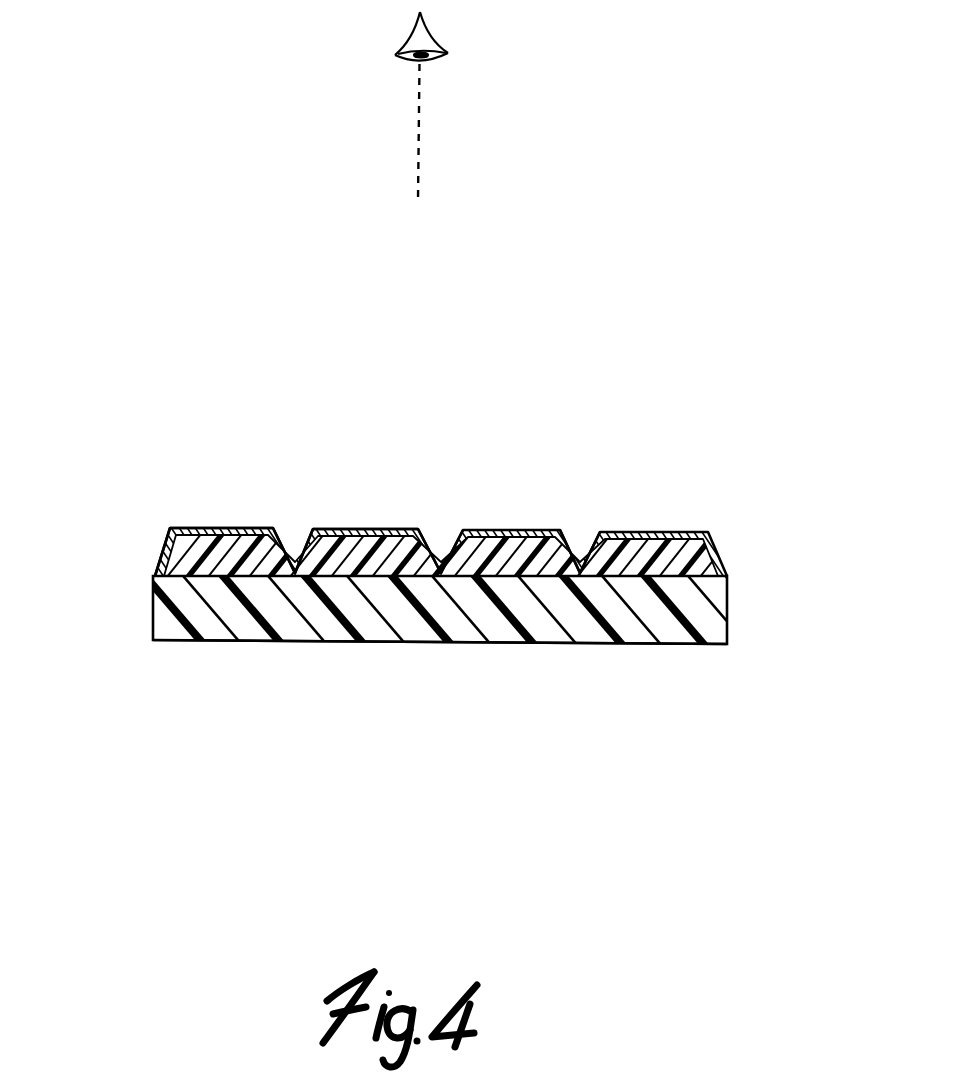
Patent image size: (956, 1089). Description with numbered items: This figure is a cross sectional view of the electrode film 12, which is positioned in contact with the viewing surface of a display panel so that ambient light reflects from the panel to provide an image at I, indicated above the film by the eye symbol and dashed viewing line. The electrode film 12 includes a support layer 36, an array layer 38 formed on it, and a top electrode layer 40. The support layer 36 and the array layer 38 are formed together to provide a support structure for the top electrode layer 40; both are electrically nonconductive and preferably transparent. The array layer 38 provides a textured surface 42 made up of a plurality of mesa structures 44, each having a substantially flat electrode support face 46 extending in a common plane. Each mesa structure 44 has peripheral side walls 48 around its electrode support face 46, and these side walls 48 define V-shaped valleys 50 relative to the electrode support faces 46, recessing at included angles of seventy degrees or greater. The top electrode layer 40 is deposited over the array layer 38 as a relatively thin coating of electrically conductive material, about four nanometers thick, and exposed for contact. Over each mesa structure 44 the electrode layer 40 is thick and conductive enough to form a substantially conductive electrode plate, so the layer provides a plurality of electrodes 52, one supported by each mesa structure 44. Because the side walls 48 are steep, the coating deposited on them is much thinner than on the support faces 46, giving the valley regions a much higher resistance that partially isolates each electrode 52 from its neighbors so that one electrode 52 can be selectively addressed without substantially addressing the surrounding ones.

The electrode film 12 is at (178, 341).
The support layer 36 is at (728, 609).
The array layer 38 is at (720, 556).
The top electrode layer 40 is at (668, 532).
The textured surface 42 is at (150, 550).
The mesa structure 44 is at (221, 542).
The electrode support face 46 is at (382, 535).
The peripheral side walls 48 is at (448, 538).
The valleys 50 is at (586, 530).
The electrodes 52 is at (325, 530).
The image I is at (433, 38).